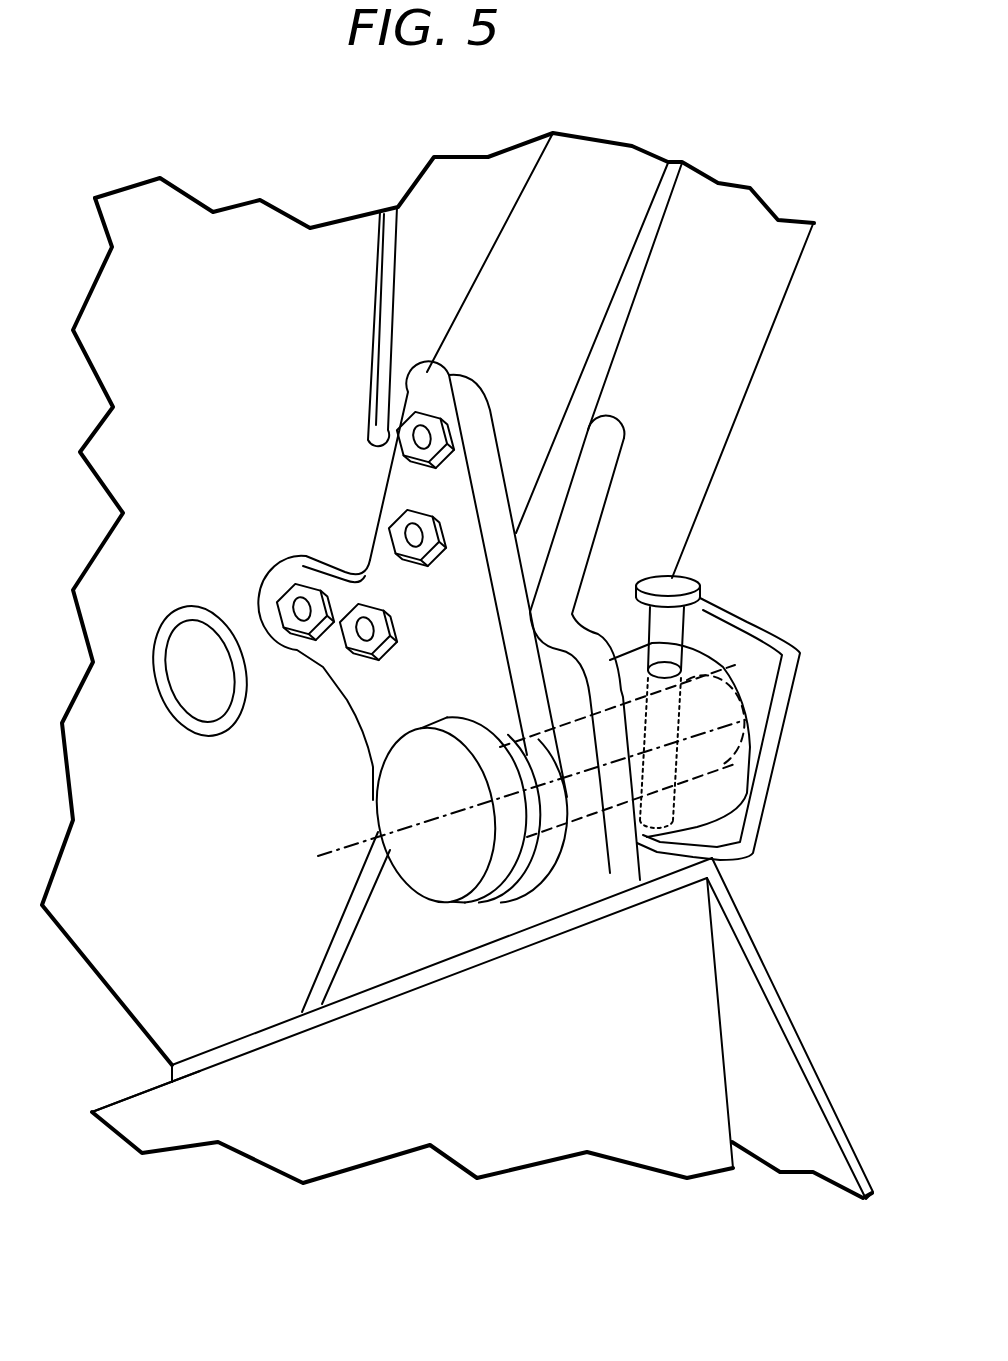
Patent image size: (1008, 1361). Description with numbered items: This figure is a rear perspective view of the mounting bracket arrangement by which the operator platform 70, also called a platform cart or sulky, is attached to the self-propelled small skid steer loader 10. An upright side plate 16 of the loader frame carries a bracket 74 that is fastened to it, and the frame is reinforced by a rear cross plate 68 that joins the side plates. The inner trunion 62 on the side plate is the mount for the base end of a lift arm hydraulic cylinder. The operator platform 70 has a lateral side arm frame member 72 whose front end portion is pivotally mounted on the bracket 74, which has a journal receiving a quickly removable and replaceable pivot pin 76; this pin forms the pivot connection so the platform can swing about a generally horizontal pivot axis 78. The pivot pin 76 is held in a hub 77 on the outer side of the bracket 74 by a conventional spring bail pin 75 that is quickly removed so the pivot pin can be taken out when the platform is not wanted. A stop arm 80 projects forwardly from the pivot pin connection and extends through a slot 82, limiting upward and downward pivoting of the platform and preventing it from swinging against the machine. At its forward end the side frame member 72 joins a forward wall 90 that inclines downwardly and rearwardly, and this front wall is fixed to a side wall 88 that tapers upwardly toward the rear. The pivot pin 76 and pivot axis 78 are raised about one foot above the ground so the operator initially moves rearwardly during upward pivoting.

The self-propelled small skid steer loader 10 is at (540, 116).
The side plate 16 is at (582, 316).
The inner trunion 62 is at (162, 687).
The rear cross plate 68 is at (680, 552).
The operator platform 70 is at (760, 873).
The side arm frame member 72 is at (622, 872).
The bracket 74 is at (380, 703).
The spring bail pin 75 is at (758, 637).
The pivot pin 76 is at (437, 895).
The hub 77 is at (735, 722).
The pivot axis 78 is at (338, 855).
The stop arm 80 is at (572, 640).
The slot 82 is at (610, 463).
The side wall 88 is at (758, 1027).
The forward wall 90 is at (175, 1117).